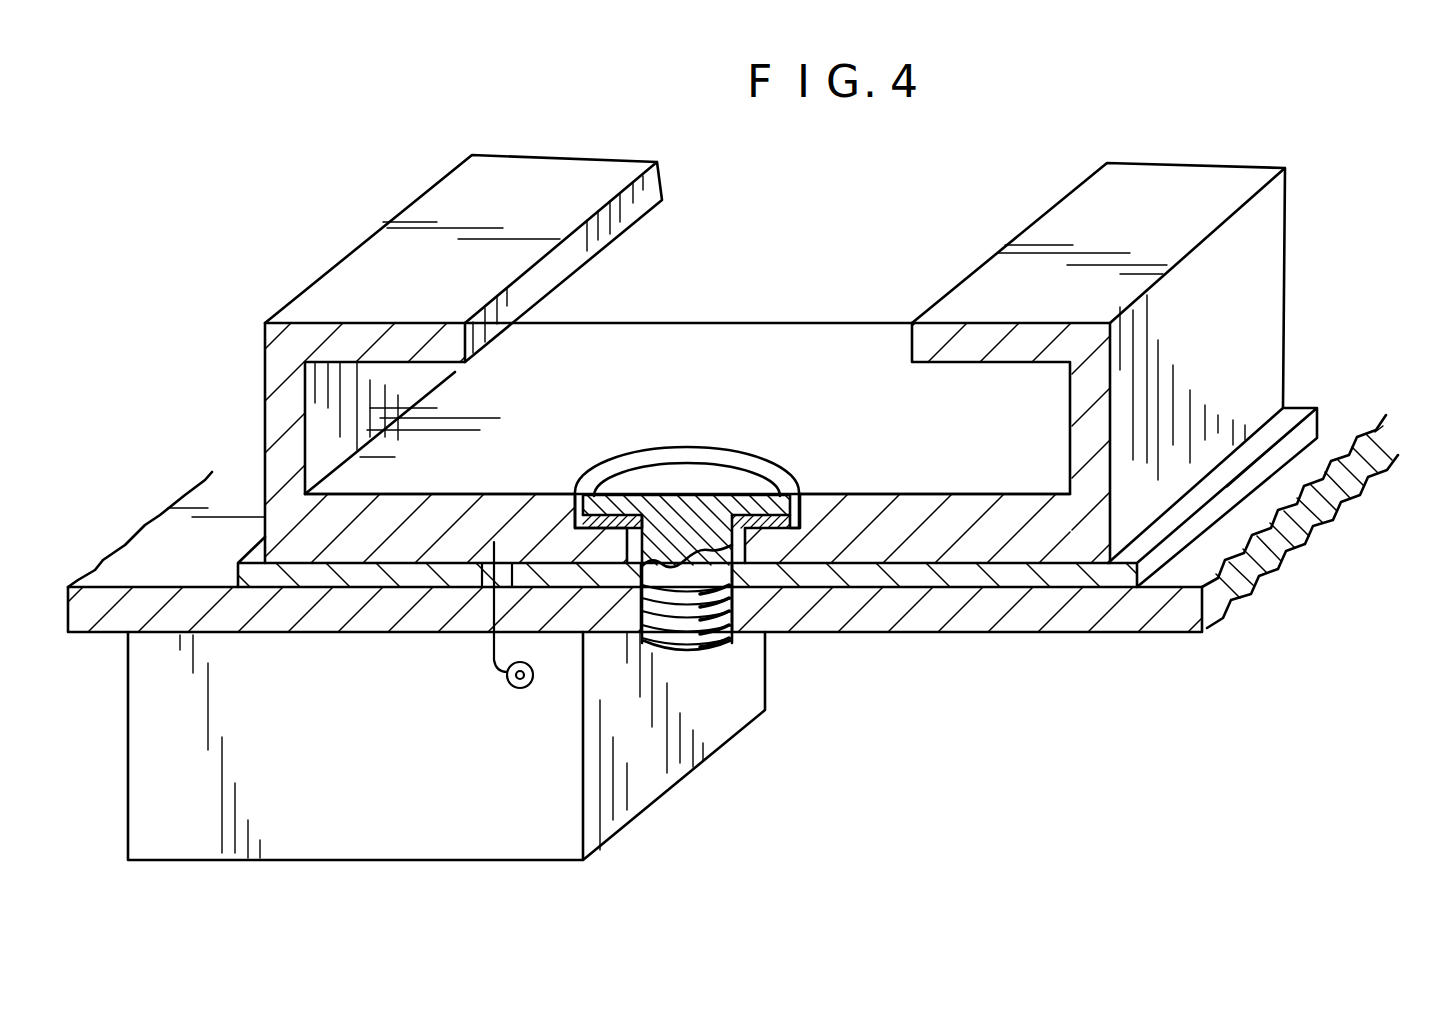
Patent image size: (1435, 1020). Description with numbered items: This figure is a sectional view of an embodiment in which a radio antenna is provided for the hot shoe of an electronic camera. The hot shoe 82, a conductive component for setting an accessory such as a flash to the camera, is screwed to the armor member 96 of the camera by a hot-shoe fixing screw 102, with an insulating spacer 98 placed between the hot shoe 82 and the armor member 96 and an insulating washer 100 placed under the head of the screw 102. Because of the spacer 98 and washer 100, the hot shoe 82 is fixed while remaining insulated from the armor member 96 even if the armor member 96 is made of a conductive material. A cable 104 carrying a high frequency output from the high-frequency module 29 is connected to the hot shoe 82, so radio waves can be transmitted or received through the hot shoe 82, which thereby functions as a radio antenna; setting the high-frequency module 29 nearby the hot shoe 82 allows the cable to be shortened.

The hot shoe 82 is at (360, 337).
The insulating spacer 98 is at (822, 570).
The armor member 96 is at (1143, 607).
The high-frequency module 29 is at (633, 755).
The insulating washer 100 is at (605, 508).
The hot-shoe fixing screw 102 is at (692, 510).
The cable 104 is at (493, 662).